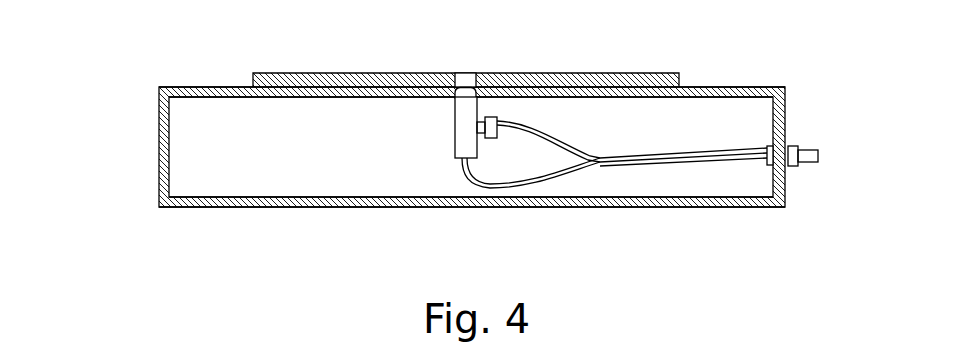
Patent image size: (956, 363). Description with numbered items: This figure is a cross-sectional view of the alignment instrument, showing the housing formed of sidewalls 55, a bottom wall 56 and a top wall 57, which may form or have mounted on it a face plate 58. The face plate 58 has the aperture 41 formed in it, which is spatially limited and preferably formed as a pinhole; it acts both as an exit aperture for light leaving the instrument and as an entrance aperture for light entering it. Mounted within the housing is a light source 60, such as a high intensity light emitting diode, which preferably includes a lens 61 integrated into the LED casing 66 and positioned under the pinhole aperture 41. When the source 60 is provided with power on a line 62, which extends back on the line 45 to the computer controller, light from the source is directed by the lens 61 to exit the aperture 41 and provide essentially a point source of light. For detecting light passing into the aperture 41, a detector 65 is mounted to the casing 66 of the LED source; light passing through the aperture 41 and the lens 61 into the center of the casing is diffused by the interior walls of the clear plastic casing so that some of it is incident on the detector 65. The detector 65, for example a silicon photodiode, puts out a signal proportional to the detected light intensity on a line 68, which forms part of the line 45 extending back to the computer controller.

The aperture 41 is at (472, 73).
The line 45 is at (805, 146).
The sidewalls 55 is at (165, 150).
The bottom wall 56 is at (222, 208).
The top wall 57 is at (203, 85).
The face plate 58 is at (600, 73).
The light source 60 is at (453, 123).
The lens 61 is at (455, 97).
The line 62 is at (472, 177).
The detector 65 is at (498, 123).
The casing 66 is at (480, 133).
The line 68 is at (580, 152).